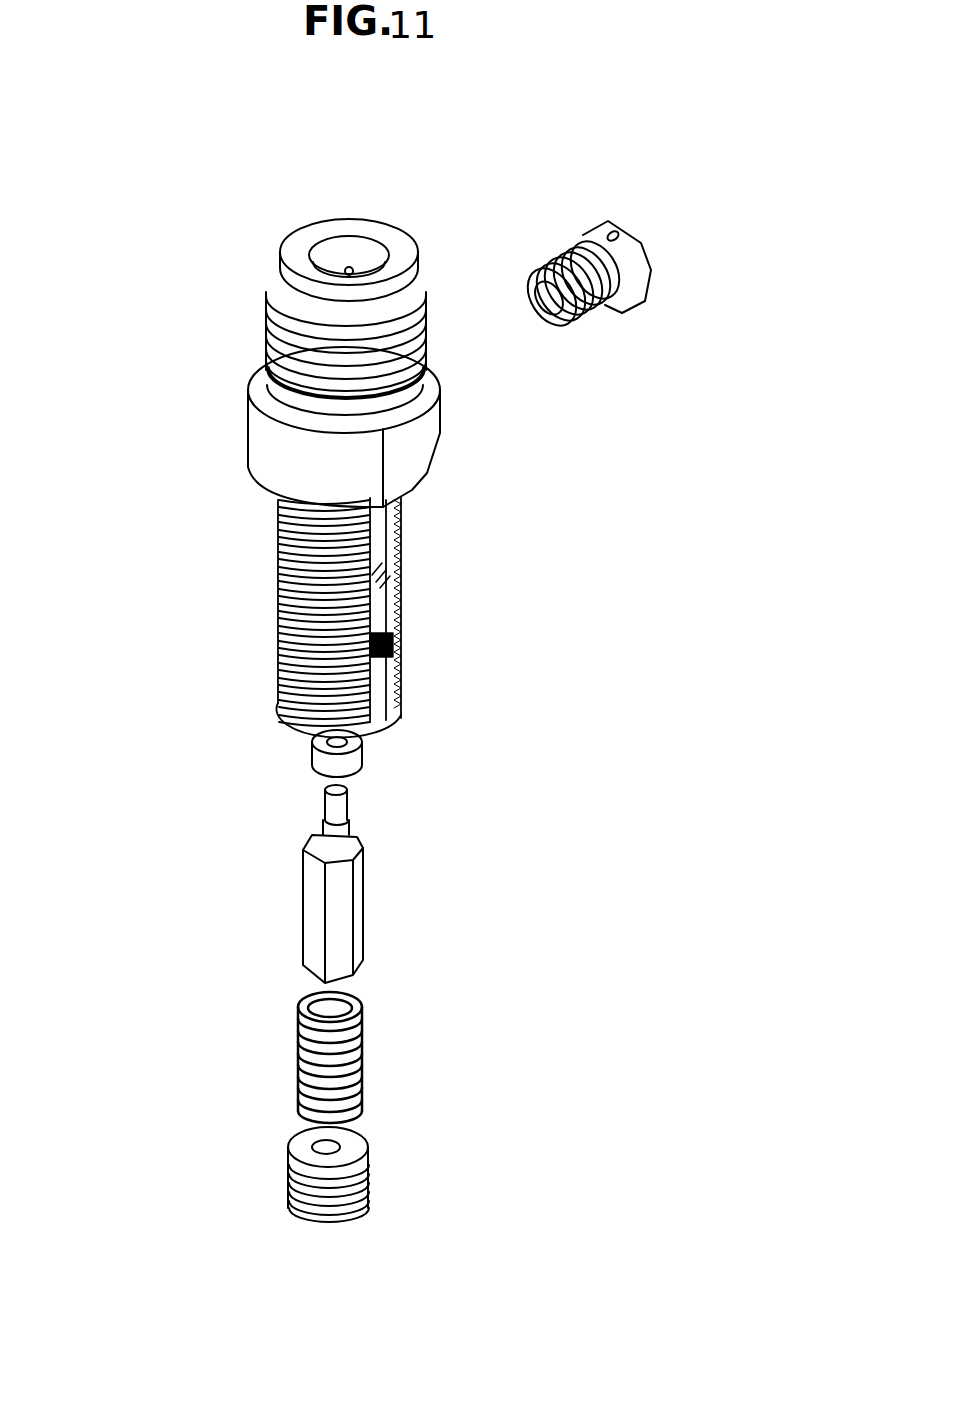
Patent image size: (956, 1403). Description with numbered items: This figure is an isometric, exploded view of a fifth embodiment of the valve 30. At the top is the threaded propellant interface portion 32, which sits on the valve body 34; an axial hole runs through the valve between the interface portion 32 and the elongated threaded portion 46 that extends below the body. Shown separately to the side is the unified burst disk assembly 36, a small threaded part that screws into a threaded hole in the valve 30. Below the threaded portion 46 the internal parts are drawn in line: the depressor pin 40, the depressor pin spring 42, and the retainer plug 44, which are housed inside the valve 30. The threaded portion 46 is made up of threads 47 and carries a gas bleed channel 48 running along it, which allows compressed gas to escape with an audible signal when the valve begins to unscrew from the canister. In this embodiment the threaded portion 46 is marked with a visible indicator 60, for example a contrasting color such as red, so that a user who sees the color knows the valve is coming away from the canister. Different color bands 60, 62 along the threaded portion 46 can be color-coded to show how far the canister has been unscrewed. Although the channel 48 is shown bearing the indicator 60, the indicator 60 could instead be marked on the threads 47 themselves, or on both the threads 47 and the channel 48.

The valve 30 is at (343, 119).
The threaded propellant interface portion 32 is at (263, 297).
The valve body 34 is at (407, 448).
The unified burst disk assembly 36 is at (651, 280).
The depressor pin 40 is at (296, 913).
The depressor pin spring 42 is at (293, 1064).
The retainer plug 44 is at (289, 1190).
The threaded portion 46 is at (278, 538).
The threads 47 is at (310, 630).
The gas bleed channel 48 is at (373, 695).
The visible indicator 60 is at (403, 558).
The color band 62 is at (400, 673).